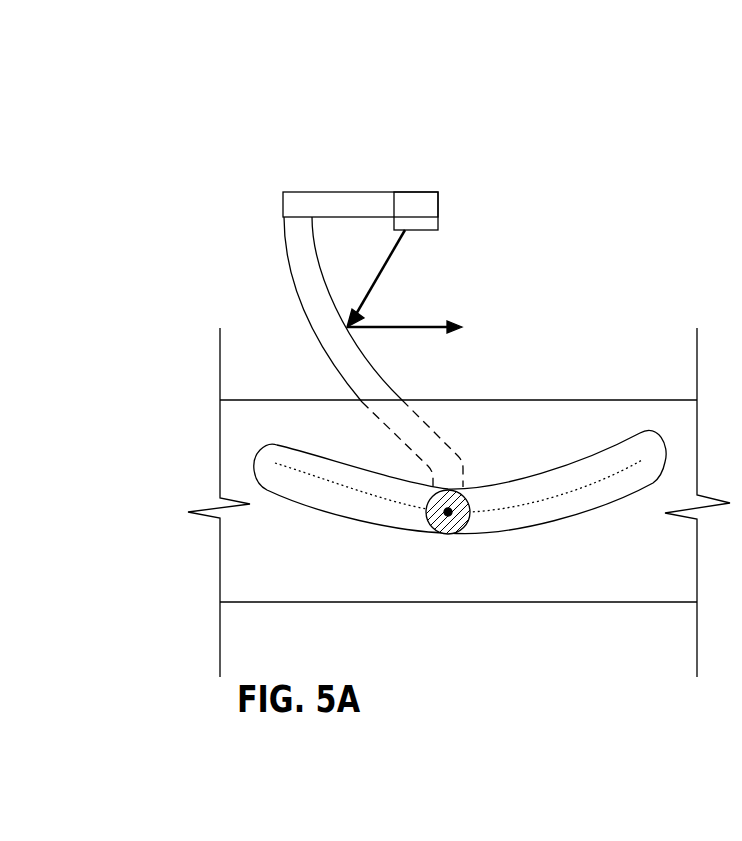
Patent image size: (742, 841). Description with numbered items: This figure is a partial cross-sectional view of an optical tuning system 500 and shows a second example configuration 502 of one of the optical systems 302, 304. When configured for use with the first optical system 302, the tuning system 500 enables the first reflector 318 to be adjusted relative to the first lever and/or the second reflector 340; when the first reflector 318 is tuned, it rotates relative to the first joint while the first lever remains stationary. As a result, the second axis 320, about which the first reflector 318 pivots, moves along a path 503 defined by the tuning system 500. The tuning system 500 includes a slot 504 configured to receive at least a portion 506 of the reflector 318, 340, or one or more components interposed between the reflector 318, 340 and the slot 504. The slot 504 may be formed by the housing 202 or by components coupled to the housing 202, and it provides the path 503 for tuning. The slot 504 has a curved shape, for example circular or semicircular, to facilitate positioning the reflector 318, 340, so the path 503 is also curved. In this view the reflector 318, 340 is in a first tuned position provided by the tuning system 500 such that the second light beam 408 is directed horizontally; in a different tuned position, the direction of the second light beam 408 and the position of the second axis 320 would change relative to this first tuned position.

The optical tuning system 500 is at (171, 596).
The second example configuration 502 is at (184, 97).
The housing 202 is at (523, 603).
The first optical system 302 is at (426, 187).
The second optical system 304 is at (500, 202).
The first reflector 318 is at (320, 352).
The second reflector 340 is at (295, 288).
The second light beam 408 is at (429, 326).
The path 503 is at (603, 480).
The slot 504 is at (288, 461).
The portion of the reflector 506 is at (470, 500).
The second axis 320 is at (448, 534).